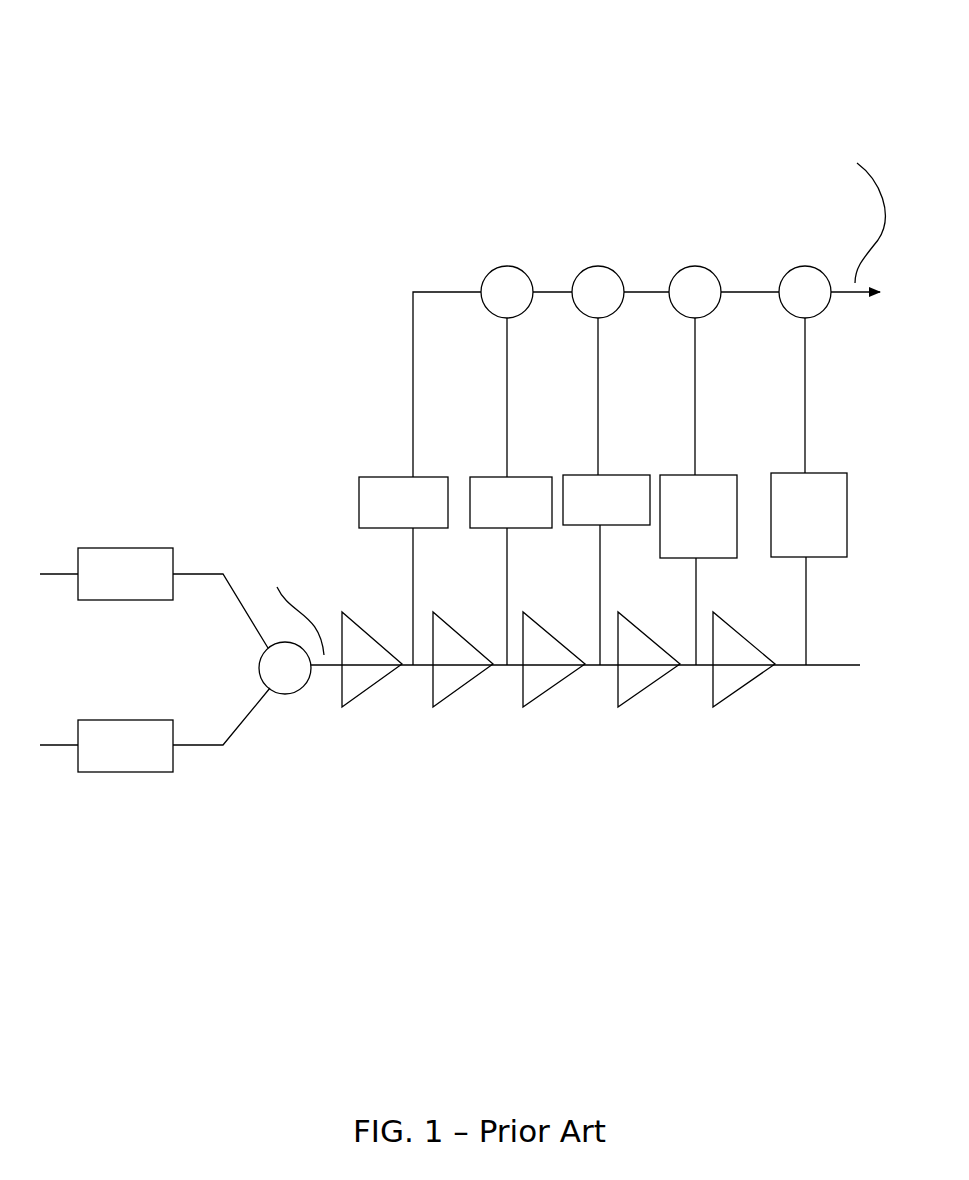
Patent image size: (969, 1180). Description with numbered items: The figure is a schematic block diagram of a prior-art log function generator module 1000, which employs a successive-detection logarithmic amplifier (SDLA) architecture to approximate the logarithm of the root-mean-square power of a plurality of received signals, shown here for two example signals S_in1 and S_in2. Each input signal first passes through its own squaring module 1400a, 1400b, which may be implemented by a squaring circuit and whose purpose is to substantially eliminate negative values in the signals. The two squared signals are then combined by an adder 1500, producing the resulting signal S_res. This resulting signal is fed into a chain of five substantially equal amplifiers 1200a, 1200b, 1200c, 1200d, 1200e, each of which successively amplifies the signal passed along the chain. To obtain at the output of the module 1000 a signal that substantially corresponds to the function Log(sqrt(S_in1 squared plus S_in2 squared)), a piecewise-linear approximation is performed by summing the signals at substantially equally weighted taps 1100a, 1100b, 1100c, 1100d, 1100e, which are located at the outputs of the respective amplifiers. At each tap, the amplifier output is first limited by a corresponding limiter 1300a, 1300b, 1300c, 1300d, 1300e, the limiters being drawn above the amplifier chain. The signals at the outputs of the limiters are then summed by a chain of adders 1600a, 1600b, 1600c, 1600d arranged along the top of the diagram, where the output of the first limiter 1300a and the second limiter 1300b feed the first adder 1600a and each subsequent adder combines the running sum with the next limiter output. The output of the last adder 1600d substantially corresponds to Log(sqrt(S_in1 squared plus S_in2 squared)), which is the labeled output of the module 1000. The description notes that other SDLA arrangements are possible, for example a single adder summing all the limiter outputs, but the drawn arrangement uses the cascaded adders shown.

The log function generator module 1000 is at (170, 40).
The squaring module 1400a is at (145, 548).
The squaring module 1400b is at (135, 720).
The adder 1500 is at (265, 648).
The tap 1100a is at (412, 588).
The tap 1100b is at (506, 588).
The tap 1100c is at (599, 585).
The tap 1100d is at (695, 588).
The tap 1100e is at (805, 585).
The amplifier 1200a is at (372, 690).
The amplifier 1200b is at (463, 690).
The amplifier 1200c is at (557, 690).
The amplifier 1200d is at (655, 690).
The amplifier 1200e is at (750, 690).
The limiter 1300a is at (407, 476).
The limiter 1300b is at (497, 476).
The limiter 1300c is at (590, 474).
The limiter 1300d is at (688, 474).
The limiter 1300e is at (797, 472).
The adder 1600a is at (482, 268).
The adder 1600b is at (577, 267).
The adder 1600c is at (677, 265).
The adder 1600d is at (787, 265).